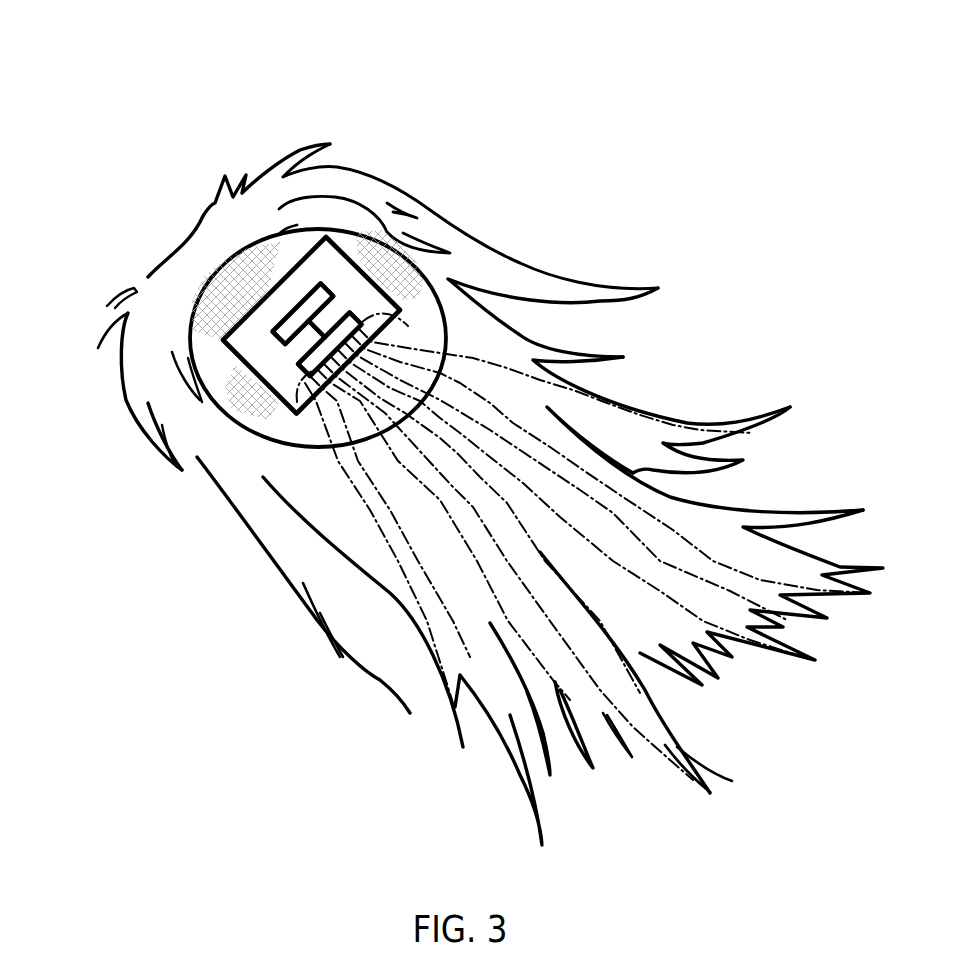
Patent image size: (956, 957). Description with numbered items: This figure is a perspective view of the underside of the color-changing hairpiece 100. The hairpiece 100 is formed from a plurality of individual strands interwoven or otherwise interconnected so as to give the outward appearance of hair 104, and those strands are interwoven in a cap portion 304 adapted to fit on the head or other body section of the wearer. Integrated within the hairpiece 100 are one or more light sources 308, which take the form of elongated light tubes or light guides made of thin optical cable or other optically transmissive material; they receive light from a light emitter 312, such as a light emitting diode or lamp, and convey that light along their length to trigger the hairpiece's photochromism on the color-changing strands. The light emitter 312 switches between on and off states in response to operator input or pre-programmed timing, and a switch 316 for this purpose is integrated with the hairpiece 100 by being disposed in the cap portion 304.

The hairpiece 100 is at (658, 139).
The hair 104 is at (217, 453).
The cap portion 304 is at (247, 250).
The light sources 308 is at (733, 430).
The light emitter 312 is at (352, 318).
The switch 316 is at (287, 322).